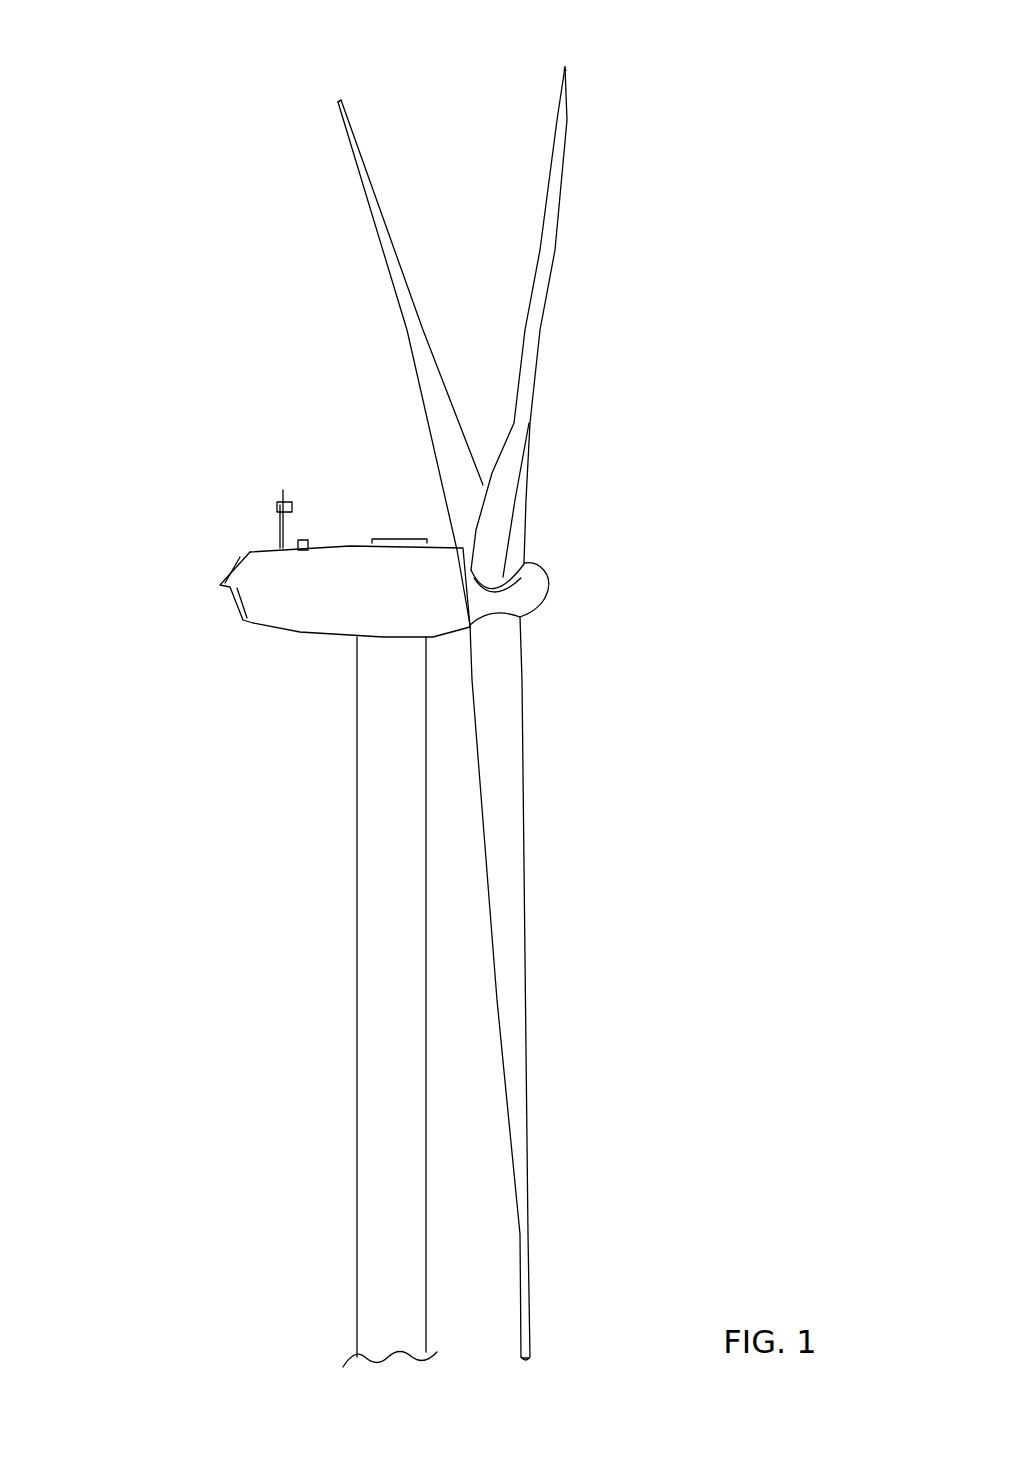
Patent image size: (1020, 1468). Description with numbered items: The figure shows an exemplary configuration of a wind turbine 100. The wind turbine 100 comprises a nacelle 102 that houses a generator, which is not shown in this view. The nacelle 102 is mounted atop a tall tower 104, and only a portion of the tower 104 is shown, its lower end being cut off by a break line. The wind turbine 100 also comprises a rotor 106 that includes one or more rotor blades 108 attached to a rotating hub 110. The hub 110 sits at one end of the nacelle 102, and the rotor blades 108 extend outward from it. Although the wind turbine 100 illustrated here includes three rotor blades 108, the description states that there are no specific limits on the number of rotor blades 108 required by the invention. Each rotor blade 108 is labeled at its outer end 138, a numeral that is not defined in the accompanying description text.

The wind turbine 100 is at (178, 331).
The nacelle 102 is at (300, 633).
The tower 104 is at (357, 940).
The rotor 106 is at (635, 364).
The rotor blades 108 is at (378, 195).
The rotating hub 110 is at (545, 603).
The blade tip 138 is at (337, 98).